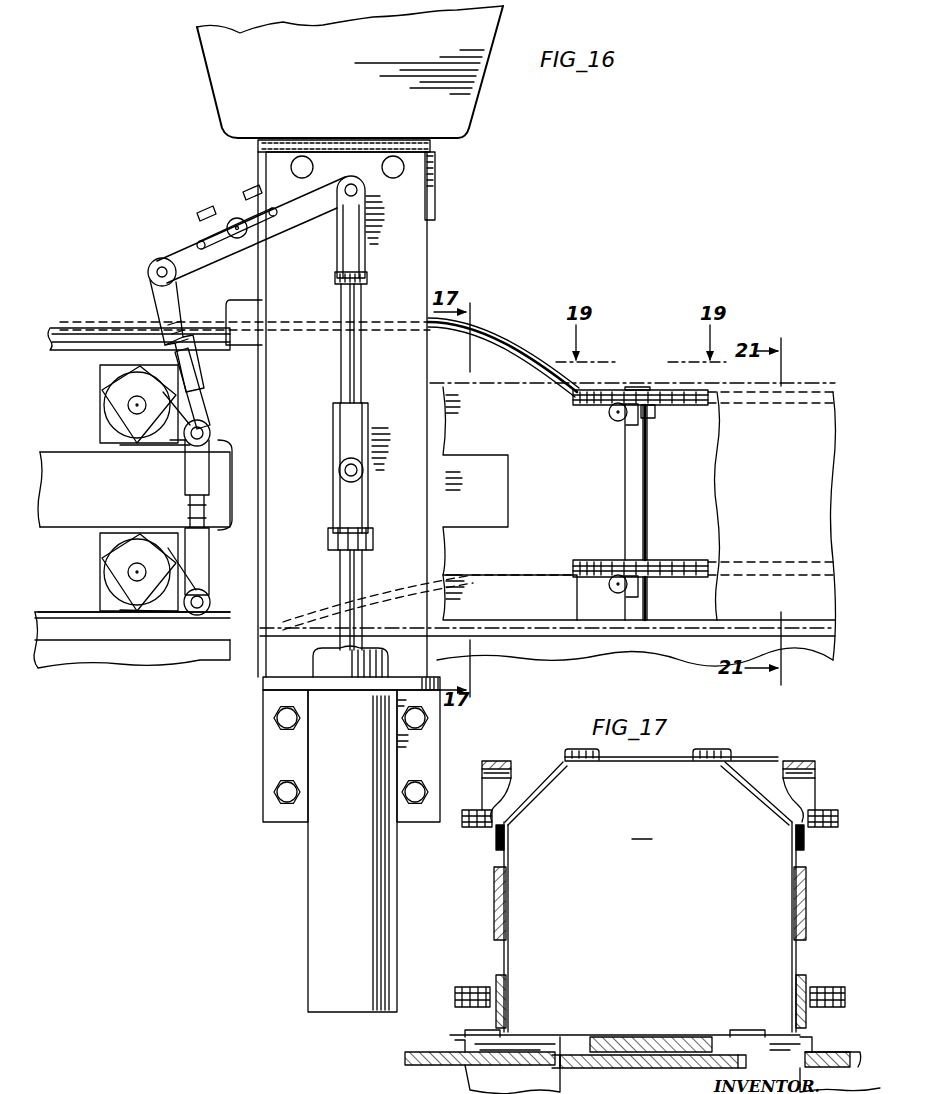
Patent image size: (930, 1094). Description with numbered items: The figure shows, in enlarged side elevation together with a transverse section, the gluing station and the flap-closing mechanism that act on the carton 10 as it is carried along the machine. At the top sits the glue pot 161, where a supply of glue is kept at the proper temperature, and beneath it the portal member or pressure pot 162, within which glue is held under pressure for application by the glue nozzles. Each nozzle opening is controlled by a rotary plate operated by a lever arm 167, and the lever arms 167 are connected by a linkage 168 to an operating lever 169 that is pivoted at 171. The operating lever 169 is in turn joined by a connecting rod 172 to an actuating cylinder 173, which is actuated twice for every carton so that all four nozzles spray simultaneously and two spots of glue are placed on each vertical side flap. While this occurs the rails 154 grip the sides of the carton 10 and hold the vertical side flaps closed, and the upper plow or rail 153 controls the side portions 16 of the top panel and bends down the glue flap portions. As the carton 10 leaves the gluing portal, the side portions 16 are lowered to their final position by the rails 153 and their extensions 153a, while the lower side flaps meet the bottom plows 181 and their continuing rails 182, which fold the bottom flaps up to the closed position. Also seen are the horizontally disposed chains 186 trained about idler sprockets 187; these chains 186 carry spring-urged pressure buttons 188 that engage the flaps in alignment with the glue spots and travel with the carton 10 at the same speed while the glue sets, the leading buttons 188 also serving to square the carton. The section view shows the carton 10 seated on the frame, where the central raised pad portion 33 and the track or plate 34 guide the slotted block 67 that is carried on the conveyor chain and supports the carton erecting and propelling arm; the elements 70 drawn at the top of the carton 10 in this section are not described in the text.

In FIG. 16, the glue pot 161 is at (222, 62).
In FIG. 16, the portal member or pressure pot 162 is at (418, 256).
In FIG. 16, the operating lever 169 is at (185, 248).
In FIG. 16, the pivot 171 is at (232, 218).
In FIG. 16, the linkage 168 is at (205, 510).
In FIG. 16, the rails 154 is at (80, 462).
In FIG. 17, the rails 154 is at (494, 918).
In FIG. 16, the lever arm 167 is at (172, 600).
In FIG. 16, the connecting rod 172 is at (355, 362).
In FIG. 16, the plows 181 is at (385, 595).
In FIG. 16, the actuating cylinder 173 is at (322, 892).
In FIG. 16, the upper plow or rail 153 is at (490, 350).
In FIG. 17, the upper plow or rail 153 is at (503, 761).
In FIG. 16, the rails 182 is at (538, 588).
In FIG. 17, the rails 182 is at (495, 1016).
In FIG. 16, the chains 186 is at (578, 406).
In FIG. 17, the chains 186 is at (472, 830).
In FIG. 16, the pressure buttons 188 is at (612, 420).
In FIG. 16, the idler sprockets 187 is at (650, 418).
In FIG. 17, the carton 10 is at (671, 798).
In FIG. 17, the top cap 70 is at (578, 750).
In FIG. 17, the side portions of top panel 16 is at (560, 772).
In FIG. 17, the extensions of rails 153a is at (486, 792).
In FIG. 17, the central raised pad portion or side guide plate 33 is at (635, 1066).
In FIG. 17, the track or plate 34 is at (405, 1060).
In FIG. 17, the block 67 is at (496, 1075).